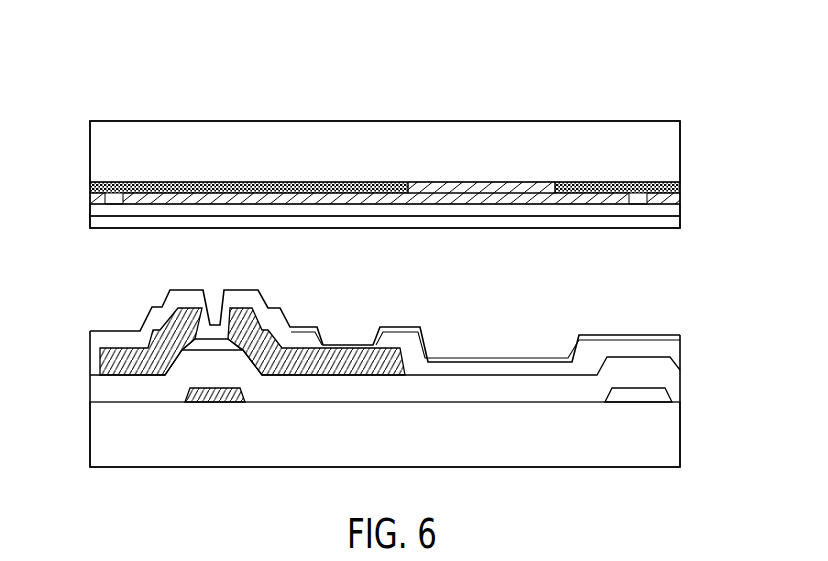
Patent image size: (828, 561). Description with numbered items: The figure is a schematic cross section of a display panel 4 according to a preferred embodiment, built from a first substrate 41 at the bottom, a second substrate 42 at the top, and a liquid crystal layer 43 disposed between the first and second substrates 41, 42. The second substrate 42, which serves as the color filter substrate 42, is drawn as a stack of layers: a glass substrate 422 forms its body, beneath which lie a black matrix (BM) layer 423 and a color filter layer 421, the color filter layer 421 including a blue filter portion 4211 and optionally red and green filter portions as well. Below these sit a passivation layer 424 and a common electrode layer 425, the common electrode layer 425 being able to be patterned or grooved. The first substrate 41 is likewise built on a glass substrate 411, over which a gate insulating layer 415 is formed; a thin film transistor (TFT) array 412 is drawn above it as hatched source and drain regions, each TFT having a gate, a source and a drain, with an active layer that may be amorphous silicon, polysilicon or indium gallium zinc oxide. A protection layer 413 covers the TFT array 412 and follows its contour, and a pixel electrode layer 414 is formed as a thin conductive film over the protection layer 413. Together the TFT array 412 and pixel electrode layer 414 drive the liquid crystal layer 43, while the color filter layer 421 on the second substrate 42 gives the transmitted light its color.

The display panel 4 is at (92, 52).
The first substrate 41 is at (697, 340).
The glass substrate 411 is at (92, 433).
The thin film transistor (TFT) array 412 is at (90, 358).
The protection layer 413 is at (90, 332).
The pixel electrode layer 414 is at (447, 359).
The gate insulating layer 415 is at (90, 389).
The second substrate 42 is at (697, 112).
The color filter layer 421 is at (90, 194).
The blue filter portion 4211 is at (483, 190).
The glass substrate 422 is at (370, 142).
The black matrix (BM) layer 423 is at (243, 183).
The passivation layer 424 is at (90, 210).
The common electrode layer 425 is at (90, 223).
The liquid crystal layer 43 is at (657, 289).